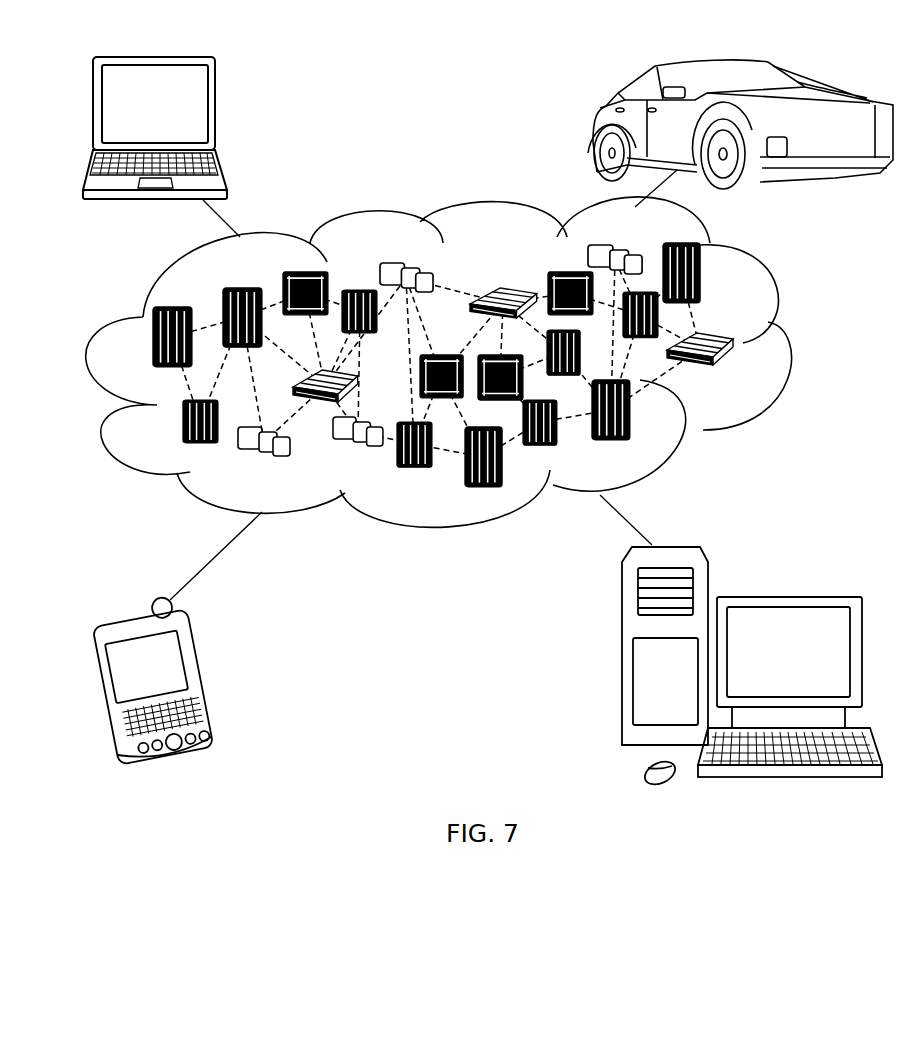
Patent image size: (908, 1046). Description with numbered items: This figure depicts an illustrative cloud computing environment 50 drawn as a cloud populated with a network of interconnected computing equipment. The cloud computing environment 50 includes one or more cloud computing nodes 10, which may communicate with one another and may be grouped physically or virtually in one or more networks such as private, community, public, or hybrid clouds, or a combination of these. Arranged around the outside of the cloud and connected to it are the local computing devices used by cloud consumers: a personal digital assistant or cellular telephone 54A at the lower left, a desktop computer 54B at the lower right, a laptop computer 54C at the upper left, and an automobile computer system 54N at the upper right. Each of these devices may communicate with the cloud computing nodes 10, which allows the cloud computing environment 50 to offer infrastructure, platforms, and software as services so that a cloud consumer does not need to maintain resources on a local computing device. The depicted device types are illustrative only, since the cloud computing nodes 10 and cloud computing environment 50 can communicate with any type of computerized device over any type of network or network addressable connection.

The cloud computing environment 50 is at (790, 350).
The cloud computing node 10 is at (742, 377).
The personal digital assistant or cellular telephone 54A is at (207, 678).
The desktop computer 54B is at (787, 597).
The laptop computer 54C is at (215, 110).
The automobile computer system 54N is at (595, 124).